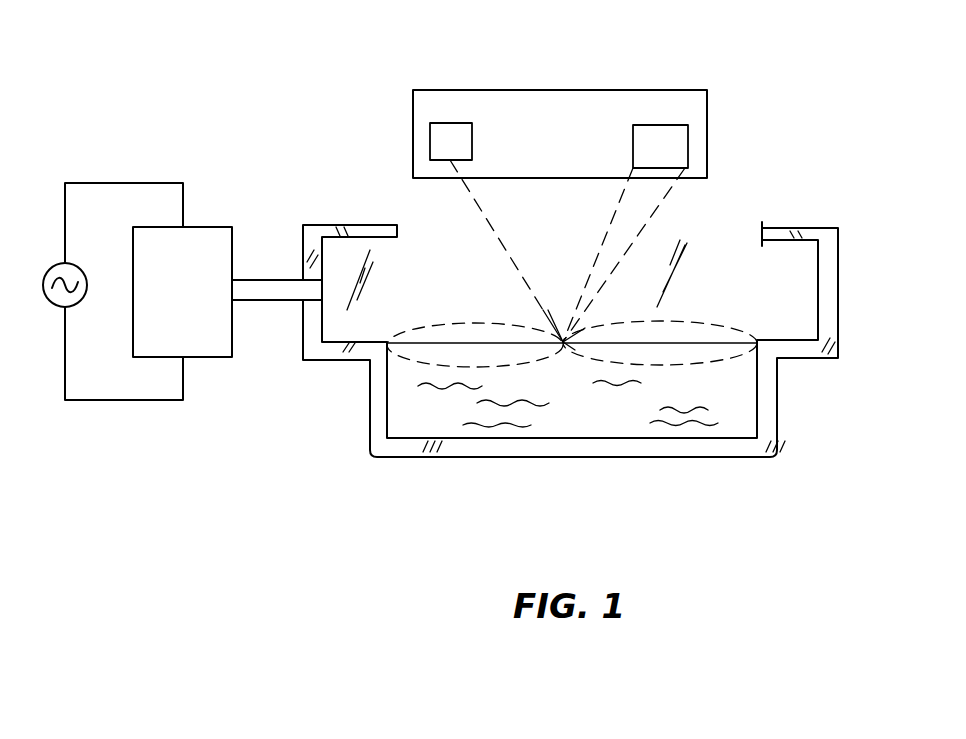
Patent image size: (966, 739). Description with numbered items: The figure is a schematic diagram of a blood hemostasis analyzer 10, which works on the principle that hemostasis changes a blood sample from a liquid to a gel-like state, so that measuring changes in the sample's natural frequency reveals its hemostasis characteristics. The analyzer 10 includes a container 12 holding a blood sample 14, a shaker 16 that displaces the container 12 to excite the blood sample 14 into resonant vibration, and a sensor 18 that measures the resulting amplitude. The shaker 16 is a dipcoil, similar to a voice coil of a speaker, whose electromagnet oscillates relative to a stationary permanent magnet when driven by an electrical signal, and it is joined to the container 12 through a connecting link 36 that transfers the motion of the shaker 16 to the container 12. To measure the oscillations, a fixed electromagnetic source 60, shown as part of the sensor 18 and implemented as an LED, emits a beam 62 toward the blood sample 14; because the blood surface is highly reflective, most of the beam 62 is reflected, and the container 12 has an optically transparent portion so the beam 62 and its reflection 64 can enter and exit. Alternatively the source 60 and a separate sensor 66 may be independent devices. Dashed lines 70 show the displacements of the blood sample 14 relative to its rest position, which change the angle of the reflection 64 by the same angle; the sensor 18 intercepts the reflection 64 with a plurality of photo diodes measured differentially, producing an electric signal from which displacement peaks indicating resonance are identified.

The blood hemostasis analyzer 10 is at (880, 147).
The container 12 is at (757, 403).
The blood sample 14 is at (728, 405).
The shaker 16 is at (203, 322).
The sensor 18 is at (593, 90).
The connecting link 36 is at (268, 280).
The electromagnetic source 60 is at (433, 138).
The beam 62 is at (498, 243).
The reflection 64 is at (650, 222).
The sensor 66 is at (667, 123).
The dashed lines 70 is at (675, 320).